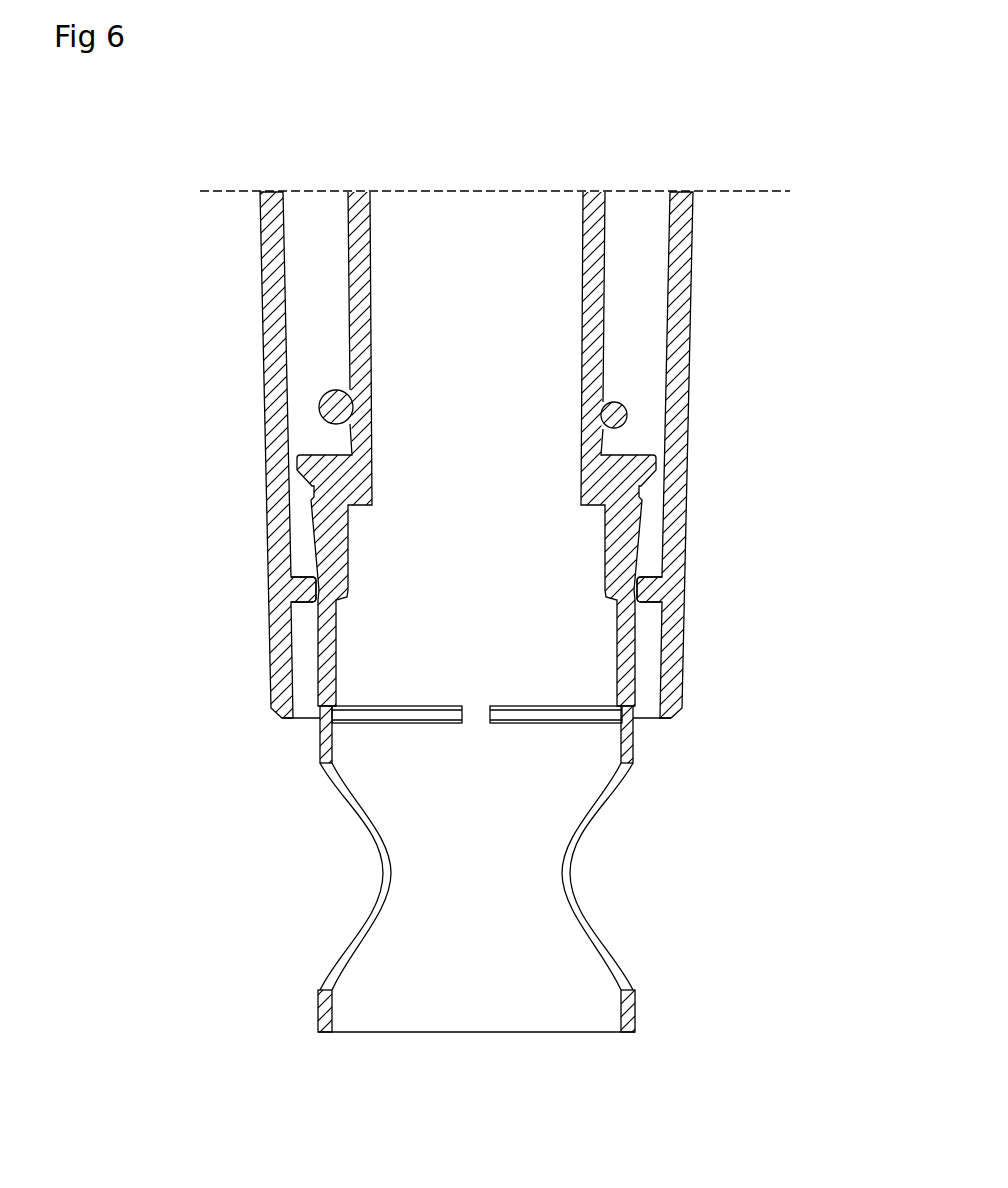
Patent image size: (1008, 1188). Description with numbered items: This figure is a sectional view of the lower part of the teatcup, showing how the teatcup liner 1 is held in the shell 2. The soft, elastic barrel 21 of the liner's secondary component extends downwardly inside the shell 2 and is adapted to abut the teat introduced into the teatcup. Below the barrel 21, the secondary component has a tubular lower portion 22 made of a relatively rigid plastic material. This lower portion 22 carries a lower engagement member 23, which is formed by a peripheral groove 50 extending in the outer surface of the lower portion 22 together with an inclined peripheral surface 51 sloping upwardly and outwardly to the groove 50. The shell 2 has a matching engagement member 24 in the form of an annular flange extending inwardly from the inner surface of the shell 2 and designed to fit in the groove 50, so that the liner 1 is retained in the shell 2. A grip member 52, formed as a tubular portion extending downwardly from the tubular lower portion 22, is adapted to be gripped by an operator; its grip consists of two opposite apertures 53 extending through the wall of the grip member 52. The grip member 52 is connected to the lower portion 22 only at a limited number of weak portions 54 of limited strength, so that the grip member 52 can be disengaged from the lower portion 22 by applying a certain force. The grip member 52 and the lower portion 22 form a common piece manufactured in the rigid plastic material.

The teatcup liner 1 is at (460, 449).
The shell 2 is at (265, 240).
The barrel 21 is at (595, 262).
The lower portion 22 is at (646, 543).
The lower engagement member 23 is at (318, 490).
The engagement member 24 is at (300, 590).
The peripheral groove 50 is at (640, 493).
The inclined peripheral surface 51 is at (318, 527).
The grip member 52 is at (636, 752).
The apertures 53 is at (377, 873).
The weak portions 54 is at (606, 706).